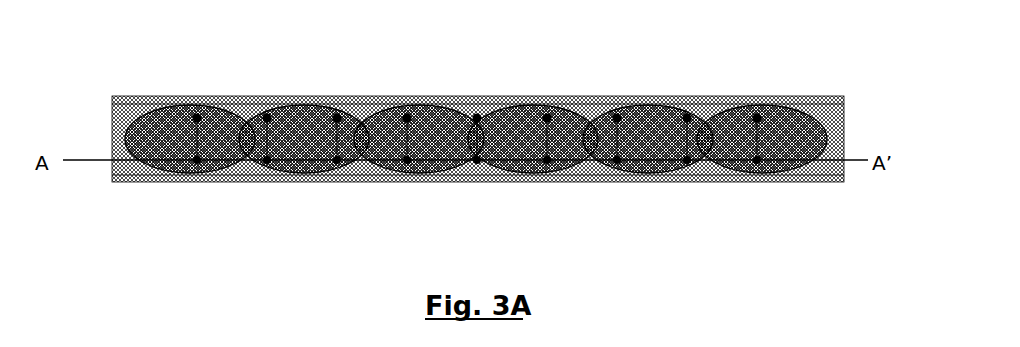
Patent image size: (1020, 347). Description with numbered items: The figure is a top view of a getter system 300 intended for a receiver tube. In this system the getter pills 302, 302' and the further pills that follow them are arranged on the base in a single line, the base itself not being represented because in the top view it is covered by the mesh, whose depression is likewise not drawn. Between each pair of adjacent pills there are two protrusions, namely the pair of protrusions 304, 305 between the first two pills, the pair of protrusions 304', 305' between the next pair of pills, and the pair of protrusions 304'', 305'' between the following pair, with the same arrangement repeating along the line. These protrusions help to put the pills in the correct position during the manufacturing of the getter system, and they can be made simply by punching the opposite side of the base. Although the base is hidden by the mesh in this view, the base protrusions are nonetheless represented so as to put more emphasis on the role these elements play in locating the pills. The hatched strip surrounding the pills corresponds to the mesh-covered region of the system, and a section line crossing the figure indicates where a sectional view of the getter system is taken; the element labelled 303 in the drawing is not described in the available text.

The getter system 300 is at (455, 136).
The getter pill 302 is at (189, 177).
The getter pill 302' is at (286, 104).
The encapsulating matrix 303 is at (125, 110).
The protrusion 304 is at (384, 76).
The protrusion 304' is at (458, 75).
The protrusion 304'' is at (534, 78).
The protrusion 305 is at (391, 204).
The protrusion 305' is at (460, 208).
The protrusion 305'' is at (550, 209).